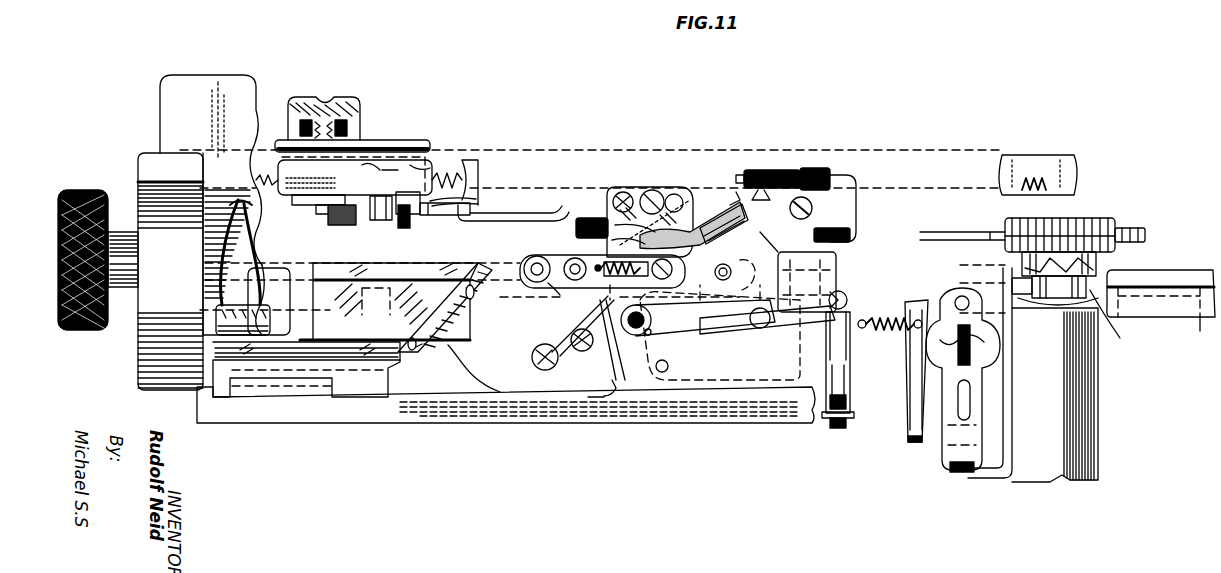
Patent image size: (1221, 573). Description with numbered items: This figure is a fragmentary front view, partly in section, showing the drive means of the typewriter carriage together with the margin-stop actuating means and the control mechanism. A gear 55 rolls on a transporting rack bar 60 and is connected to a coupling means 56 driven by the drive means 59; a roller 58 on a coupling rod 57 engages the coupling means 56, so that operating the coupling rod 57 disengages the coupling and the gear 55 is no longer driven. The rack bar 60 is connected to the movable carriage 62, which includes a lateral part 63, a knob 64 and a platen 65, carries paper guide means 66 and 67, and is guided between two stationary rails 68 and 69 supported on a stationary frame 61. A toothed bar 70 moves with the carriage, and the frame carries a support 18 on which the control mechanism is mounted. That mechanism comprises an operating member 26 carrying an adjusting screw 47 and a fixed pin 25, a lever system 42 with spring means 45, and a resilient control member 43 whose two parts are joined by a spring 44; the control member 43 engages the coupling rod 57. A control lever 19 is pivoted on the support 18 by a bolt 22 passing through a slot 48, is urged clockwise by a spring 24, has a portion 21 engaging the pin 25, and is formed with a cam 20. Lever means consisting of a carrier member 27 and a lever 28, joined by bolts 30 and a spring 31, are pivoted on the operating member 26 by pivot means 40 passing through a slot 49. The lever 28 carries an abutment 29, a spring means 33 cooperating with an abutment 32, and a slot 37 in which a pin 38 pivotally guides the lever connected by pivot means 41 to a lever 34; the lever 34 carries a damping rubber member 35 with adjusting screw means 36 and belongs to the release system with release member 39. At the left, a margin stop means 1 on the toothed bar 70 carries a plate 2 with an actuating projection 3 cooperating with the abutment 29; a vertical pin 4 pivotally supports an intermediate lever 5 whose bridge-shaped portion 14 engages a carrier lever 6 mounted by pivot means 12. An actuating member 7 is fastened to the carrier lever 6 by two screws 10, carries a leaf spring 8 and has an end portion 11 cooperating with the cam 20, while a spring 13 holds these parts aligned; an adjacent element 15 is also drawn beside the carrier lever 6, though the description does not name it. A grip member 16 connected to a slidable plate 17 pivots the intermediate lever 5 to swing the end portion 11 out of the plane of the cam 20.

The margin stop means 1 is at (284, 142).
The plate 2 is at (279, 192).
The actuating projection 3 is at (310, 205).
The vertical pin 4 is at (365, 168).
The intermediate lever 5 is at (345, 226).
The carrier lever 6 is at (416, 214).
The actuating member 7 is at (450, 216).
The leaf spring 8 is at (526, 216).
The screws 10 is at (478, 200).
The end portion 11 is at (470, 221).
The pivot means 12 is at (420, 170).
The spring 13 is at (406, 230).
The bridge-shaped portion 14 is at (390, 170).
The bolt 15 is at (382, 222).
The grip member 16 is at (298, 104).
The plate 17 is at (330, 214).
The support 18 is at (606, 397).
The control lever 19 is at (620, 380).
The cam 20 is at (708, 212).
The portion 21 is at (640, 194).
The bolt 22 is at (566, 325).
The spring 24 is at (552, 376).
The pin 25 is at (670, 197).
The operating member 26 is at (616, 194).
The carrier member 27 is at (556, 258).
The lever 28 is at (600, 276).
The abutment 29 is at (740, 188).
The bolts 30 is at (578, 259).
The spring 31 is at (644, 336).
The abutment 32 is at (814, 235).
The spring means 33 is at (760, 170).
The lever 34 is at (830, 262).
The rubber member 35 is at (815, 168).
The adjusting screw means 36 is at (772, 170).
The slot 37 is at (714, 272).
The pin 38 is at (742, 280).
The release member 39 is at (850, 398).
The pivot means 40 is at (530, 280).
The pivot means 41 is at (812, 210).
The lever system 42 is at (712, 342).
The control member 43 is at (932, 438).
The spring 44 is at (1000, 346).
The spring means 45 is at (792, 382).
The adjusting screw 47 is at (580, 220).
The slot 48 is at (582, 352).
The slot 49 is at (554, 288).
The gear 55 is at (1098, 216).
The coupling means 56 is at (1120, 338).
The coupling rod 57 is at (984, 474).
The roller 58 is at (1020, 280).
The drive means 59 is at (1092, 418).
The transporting rack bar 60 is at (1146, 236).
The stationary frame 61 is at (512, 424).
The movable carriage 62 is at (432, 328).
The lateral part 63 is at (145, 352).
The knob 64 is at (66, 330).
The platen 65 is at (218, 228).
The paper guide means 66 is at (270, 312).
The paper guide means 67 is at (220, 90).
The stationary rail 68 is at (412, 270).
The stationary rail 69 is at (346, 384).
The toothed bar 70 is at (1038, 160).